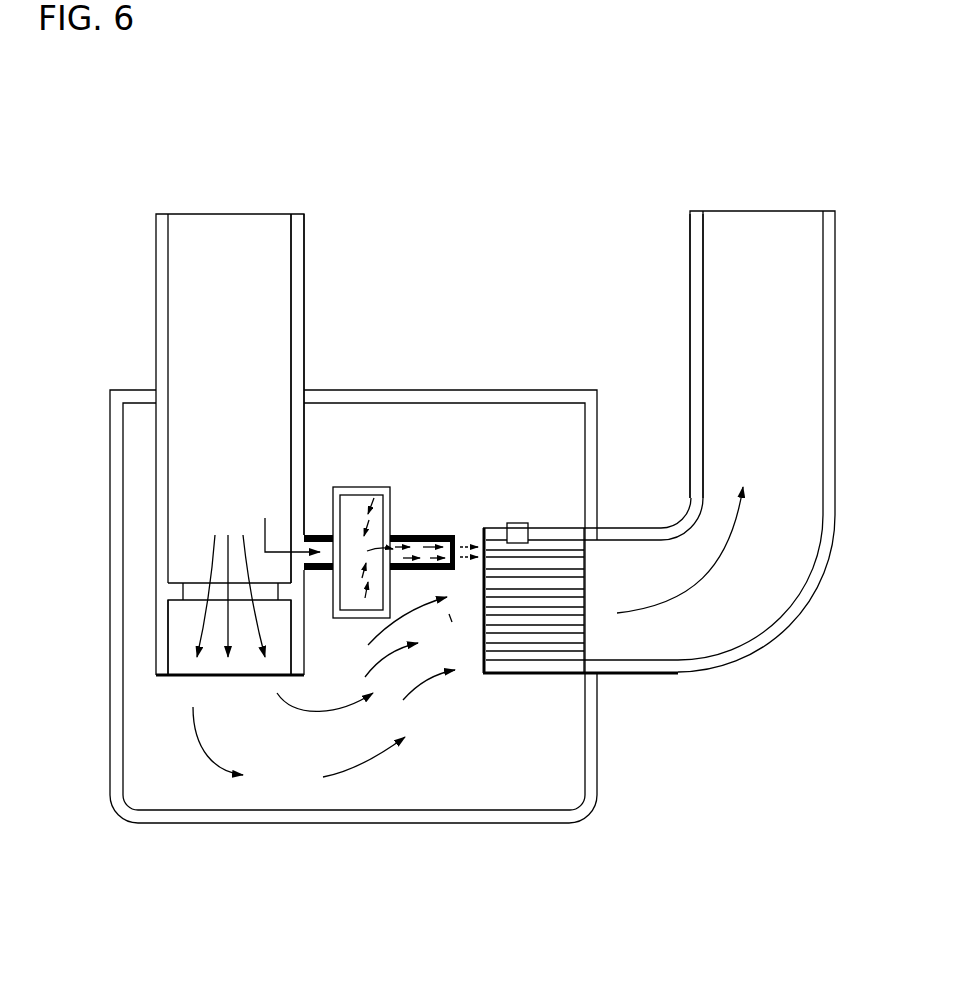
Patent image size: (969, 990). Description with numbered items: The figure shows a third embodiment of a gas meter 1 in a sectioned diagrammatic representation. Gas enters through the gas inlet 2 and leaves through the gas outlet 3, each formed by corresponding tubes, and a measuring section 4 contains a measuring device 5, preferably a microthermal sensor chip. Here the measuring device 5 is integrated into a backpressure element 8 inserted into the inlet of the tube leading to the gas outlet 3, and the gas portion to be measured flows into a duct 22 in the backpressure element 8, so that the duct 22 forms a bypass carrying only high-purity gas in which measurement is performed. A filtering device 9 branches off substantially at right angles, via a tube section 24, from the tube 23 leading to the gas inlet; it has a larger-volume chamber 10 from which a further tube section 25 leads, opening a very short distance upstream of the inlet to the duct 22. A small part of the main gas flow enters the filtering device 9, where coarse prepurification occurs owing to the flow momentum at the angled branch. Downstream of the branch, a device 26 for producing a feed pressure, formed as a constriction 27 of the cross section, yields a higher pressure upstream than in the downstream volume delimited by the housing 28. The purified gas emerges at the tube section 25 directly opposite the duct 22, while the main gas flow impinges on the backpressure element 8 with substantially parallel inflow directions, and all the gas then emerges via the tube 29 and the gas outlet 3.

The gas meter 1 is at (422, 147).
The gas inlet 2 is at (234, 401).
The gas outlet 3 is at (726, 399).
The measuring section 4 is at (548, 505).
The measuring device 5 is at (519, 522).
The backpressure element 8 is at (580, 601).
The filtering device 9 is at (400, 522).
The chamber 10 is at (372, 502).
The duct 22 is at (565, 548).
The tube 23 is at (305, 333).
The tube section 24 is at (316, 530).
The tube section 25 is at (422, 535).
The device for producing a feed pressure 26 is at (181, 619).
The constriction 27 is at (177, 593).
The housing 28 is at (480, 390).
The tube 29 is at (690, 287).